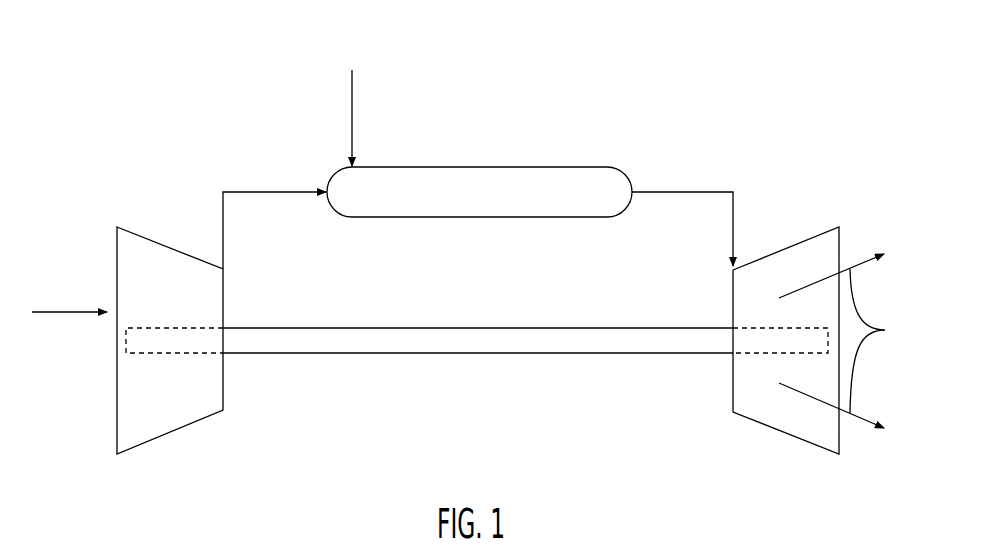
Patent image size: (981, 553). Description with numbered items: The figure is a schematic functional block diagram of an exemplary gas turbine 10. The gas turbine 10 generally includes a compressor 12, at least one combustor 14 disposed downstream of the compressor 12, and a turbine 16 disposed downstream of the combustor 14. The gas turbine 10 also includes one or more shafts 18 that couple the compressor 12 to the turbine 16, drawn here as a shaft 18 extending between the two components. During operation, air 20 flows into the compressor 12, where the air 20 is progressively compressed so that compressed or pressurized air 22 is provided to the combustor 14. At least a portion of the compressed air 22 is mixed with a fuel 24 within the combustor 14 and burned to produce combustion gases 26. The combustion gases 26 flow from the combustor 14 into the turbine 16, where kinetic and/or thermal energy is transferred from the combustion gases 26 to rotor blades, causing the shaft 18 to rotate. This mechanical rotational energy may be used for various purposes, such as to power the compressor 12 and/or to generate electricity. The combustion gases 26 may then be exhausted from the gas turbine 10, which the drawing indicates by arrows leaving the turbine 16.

The gas turbine 10 is at (146, 71).
The compressor 12 is at (173, 250).
The combustor 14 is at (575, 167).
The turbine 16 is at (813, 237).
The shaft 18 is at (433, 354).
The air 20 is at (60, 310).
The compressed air 22 is at (262, 190).
The fuel 24 is at (353, 110).
The combustion gases 26 is at (710, 190).